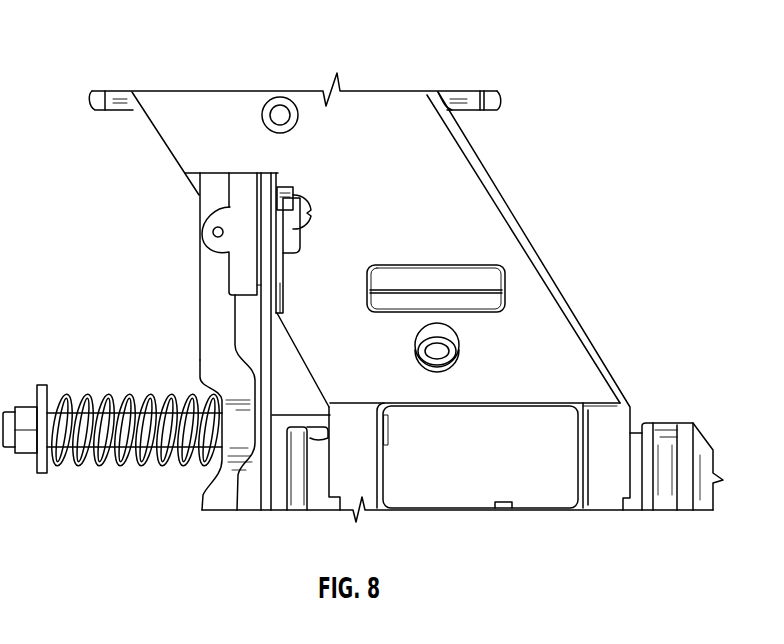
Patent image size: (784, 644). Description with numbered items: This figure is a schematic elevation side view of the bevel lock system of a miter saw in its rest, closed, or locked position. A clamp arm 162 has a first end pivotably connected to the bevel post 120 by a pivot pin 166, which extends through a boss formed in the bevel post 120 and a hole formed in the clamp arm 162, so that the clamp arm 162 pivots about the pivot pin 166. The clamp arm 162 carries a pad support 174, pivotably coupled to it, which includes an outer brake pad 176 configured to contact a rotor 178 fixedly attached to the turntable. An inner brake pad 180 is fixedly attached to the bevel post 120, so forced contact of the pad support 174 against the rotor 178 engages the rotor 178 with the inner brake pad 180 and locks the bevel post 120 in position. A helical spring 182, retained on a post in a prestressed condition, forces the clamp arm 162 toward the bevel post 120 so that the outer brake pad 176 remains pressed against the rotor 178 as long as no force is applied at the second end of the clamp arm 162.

The bevel post 120 is at (393, 113).
The clamp arm 162 is at (207, 358).
The pivot pin 166 is at (281, 114).
The pad support 174 is at (231, 228).
The outer brake pad 176 is at (261, 207).
The rotor 178 is at (268, 334).
The inner brake pad 180 is at (282, 180).
The spring 182 is at (110, 463).